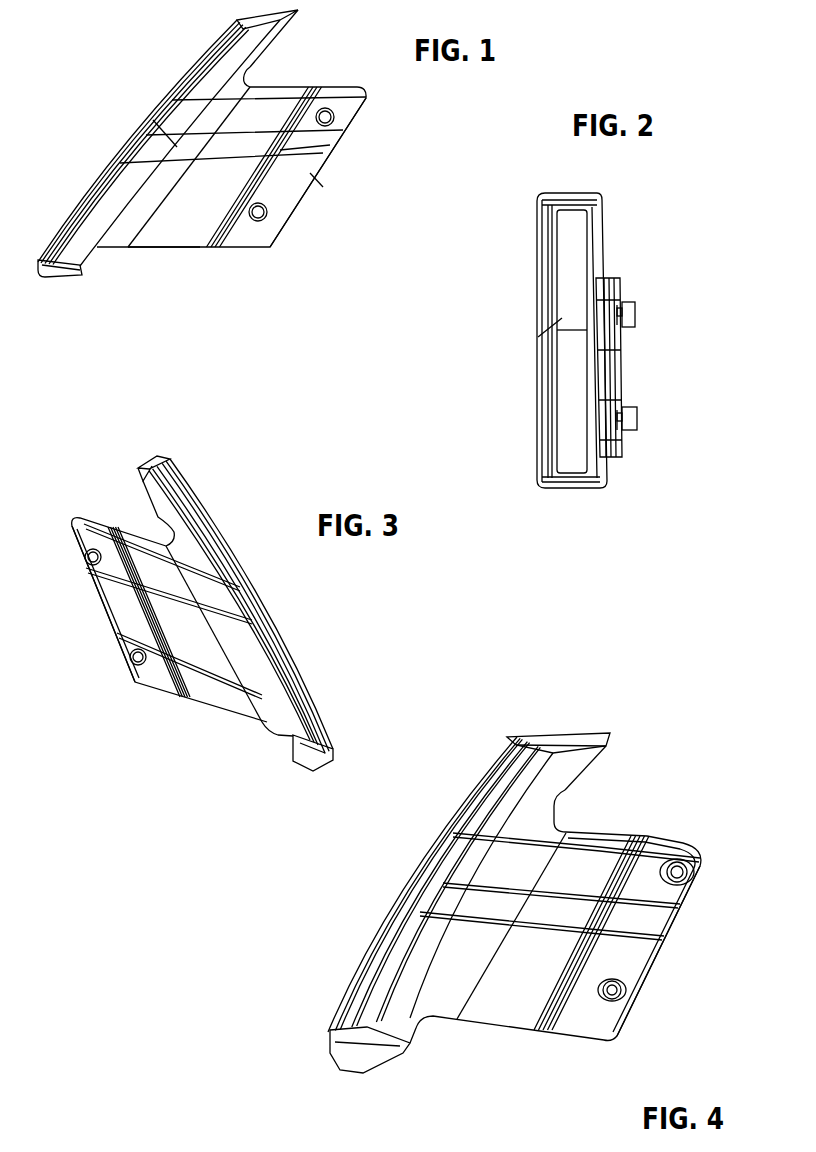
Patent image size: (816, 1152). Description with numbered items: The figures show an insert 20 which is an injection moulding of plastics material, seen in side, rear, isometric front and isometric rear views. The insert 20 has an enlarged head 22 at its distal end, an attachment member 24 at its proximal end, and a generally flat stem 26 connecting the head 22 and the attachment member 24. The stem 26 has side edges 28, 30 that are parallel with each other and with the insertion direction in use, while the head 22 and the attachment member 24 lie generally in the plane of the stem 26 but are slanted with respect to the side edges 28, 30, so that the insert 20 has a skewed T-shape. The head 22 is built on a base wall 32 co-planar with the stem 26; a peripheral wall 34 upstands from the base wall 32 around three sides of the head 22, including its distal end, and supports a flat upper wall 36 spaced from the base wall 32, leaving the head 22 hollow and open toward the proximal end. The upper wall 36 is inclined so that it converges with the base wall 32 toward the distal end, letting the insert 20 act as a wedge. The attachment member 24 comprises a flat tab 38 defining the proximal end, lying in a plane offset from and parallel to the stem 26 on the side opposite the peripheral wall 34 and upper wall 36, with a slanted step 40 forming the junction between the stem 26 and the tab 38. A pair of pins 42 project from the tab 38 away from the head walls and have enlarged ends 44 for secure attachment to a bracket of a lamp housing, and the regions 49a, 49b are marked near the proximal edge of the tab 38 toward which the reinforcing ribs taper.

In FIG. 1, the insert 20 is at (118, 78).
In FIG. 2, the insert 20 is at (680, 222).
In FIG. 3, the insert 20 is at (260, 507).
In FIG. 4, the insert 20 is at (457, 1072).
In FIG. 1, the head 22 is at (90, 255).
In FIG. 3, the head 22 is at (310, 670).
In FIG. 4, the head 22 is at (450, 818).
In FIG. 1, the attachment member 24 is at (271, 243).
In FIG. 2, the attachment member 24 is at (630, 375).
In FIG. 3, the attachment member 24 is at (97, 620).
In FIG. 4, the attachment member 24 is at (676, 828).
In FIG. 1, the stem 26 is at (281, 92).
In FIG. 3, the stem 26 is at (212, 695).
In FIG. 4, the stem 26 is at (520, 1018).
In FIG. 1, the side edge 28 is at (278, 83).
In FIG. 1, the side edge 30 is at (181, 250).
In FIG. 3, the base wall 32 is at (267, 712).
In FIG. 4, the base wall 32 is at (563, 776).
In FIG. 3, the peripheral wall 34 is at (153, 458).
In FIG. 4, the peripheral wall 34 is at (572, 733).
In FIG. 2, the upper wall 36 is at (550, 335).
In FIG. 3, the upper wall 36 is at (190, 472).
In FIG. 4, the upper wall 36 is at (472, 858).
In FIG. 1, the tab 38 is at (305, 178).
In FIG. 3, the tab 38 is at (97, 590).
In FIG. 4, the tab 38 is at (650, 950).
In FIG. 1, the step 40 is at (216, 248).
In FIG. 3, the step 40 is at (180, 692).
In FIG. 4, the step 40 is at (552, 1022).
In FIG. 1, the pin 42 is at (333, 122).
In FIG. 2, the pin 42 is at (620, 307).
In FIG. 3, the pin 42 is at (92, 548).
In FIG. 4, the pin 42 is at (680, 888).
In FIG. 2, the enlarged end 44 is at (633, 303).
In FIG. 4, the enlarged end 44 is at (694, 872).
In FIG. 1, the first region 49a is at (153, 125).
In FIG. 1, the second region 49b is at (333, 166).